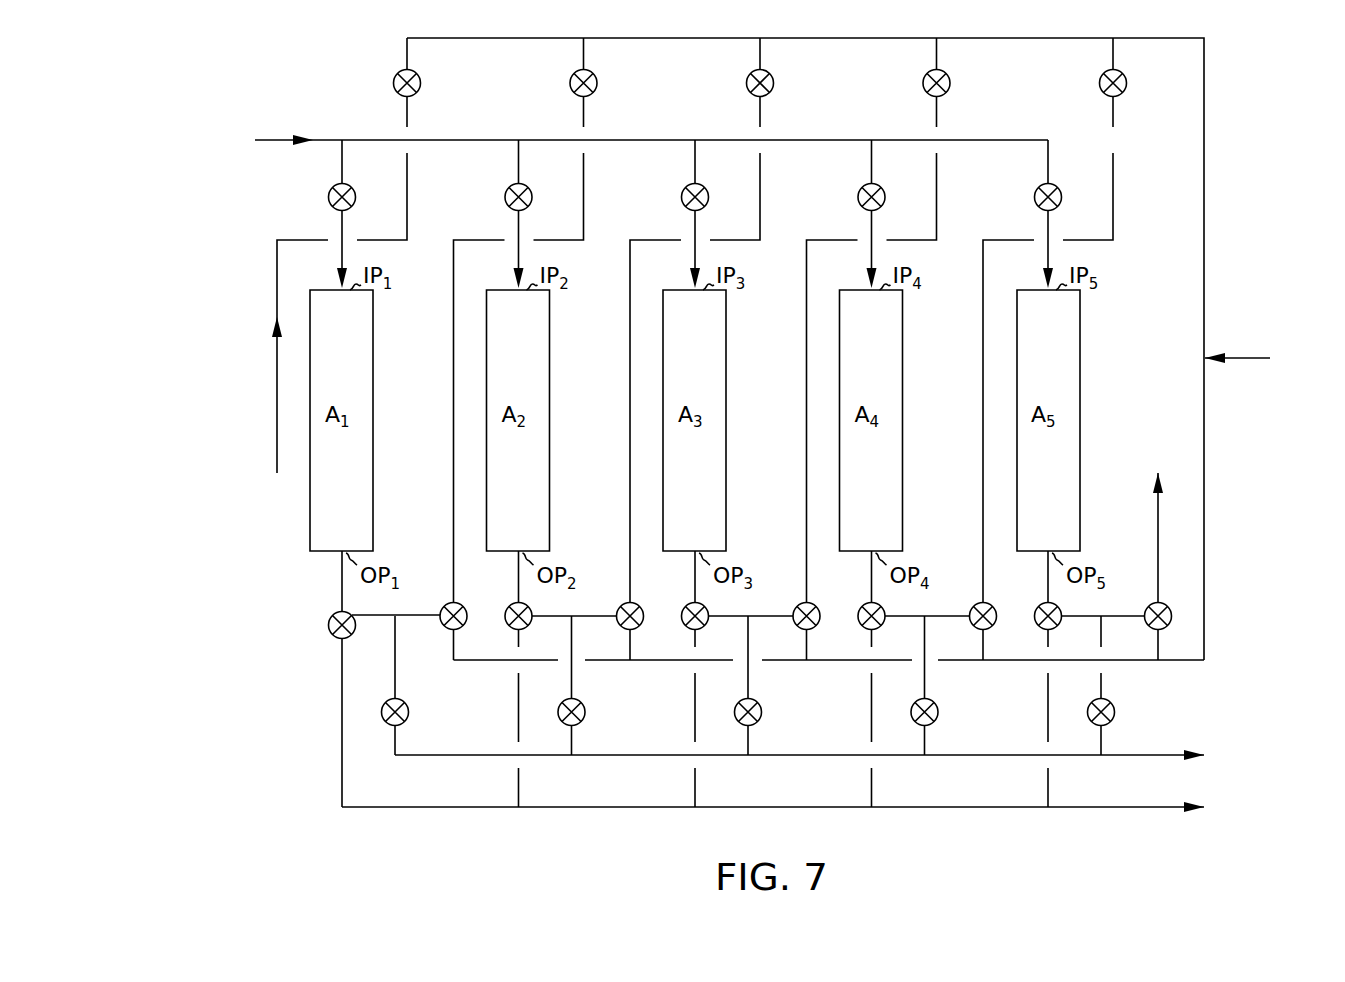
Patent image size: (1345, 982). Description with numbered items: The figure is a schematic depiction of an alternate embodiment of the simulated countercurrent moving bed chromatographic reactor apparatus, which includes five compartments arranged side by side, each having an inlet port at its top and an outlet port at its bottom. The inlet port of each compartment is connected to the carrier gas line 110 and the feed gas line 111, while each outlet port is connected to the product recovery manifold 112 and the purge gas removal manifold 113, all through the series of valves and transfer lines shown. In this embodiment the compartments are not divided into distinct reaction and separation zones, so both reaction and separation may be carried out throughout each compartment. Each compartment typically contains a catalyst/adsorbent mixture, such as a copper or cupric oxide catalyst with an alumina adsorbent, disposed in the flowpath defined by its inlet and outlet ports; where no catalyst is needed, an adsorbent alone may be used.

The carrier gas line 110 is at (276, 137).
The feed gas line 111 is at (1245, 356).
The product recovery manifold 112 is at (1145, 754).
The purge gas removal manifold 113 is at (1145, 805).